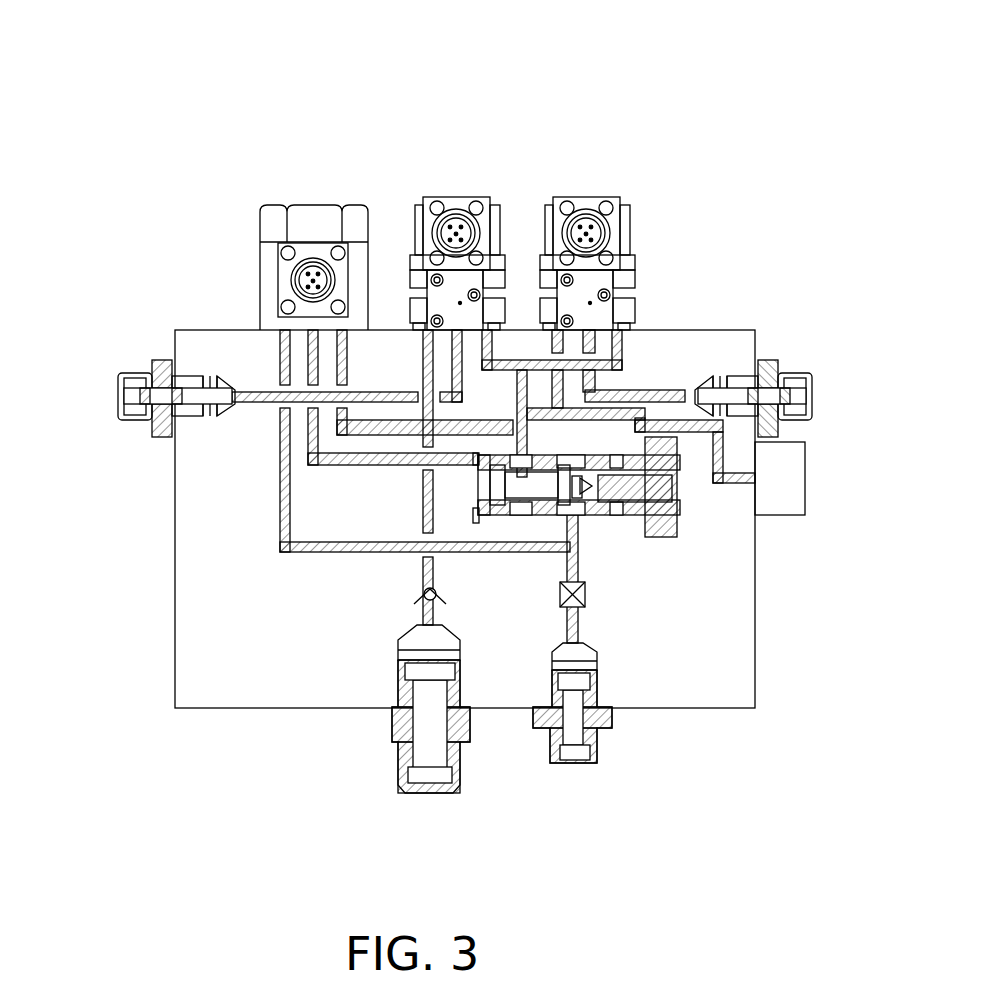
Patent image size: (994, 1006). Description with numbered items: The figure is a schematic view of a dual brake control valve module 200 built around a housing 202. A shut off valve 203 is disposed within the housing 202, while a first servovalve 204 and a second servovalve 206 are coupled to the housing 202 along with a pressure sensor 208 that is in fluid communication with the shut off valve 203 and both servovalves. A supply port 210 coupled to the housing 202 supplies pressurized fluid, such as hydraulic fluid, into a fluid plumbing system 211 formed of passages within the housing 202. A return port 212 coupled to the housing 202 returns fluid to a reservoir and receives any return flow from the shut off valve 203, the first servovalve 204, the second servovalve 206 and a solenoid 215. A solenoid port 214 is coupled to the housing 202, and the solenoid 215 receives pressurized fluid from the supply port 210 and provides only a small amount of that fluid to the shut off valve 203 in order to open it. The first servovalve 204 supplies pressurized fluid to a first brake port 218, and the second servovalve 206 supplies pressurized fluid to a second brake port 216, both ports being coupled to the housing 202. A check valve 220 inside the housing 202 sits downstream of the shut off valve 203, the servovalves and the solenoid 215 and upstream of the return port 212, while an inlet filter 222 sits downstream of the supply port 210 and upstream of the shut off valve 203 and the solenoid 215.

The dual brake control valve module 200 is at (742, 78).
The housing 202 is at (685, 330).
The shut off valve 203 is at (677, 517).
The first servovalve 204 is at (592, 197).
The second servovalve 206 is at (458, 197).
The pressure sensor 208 is at (808, 470).
The supply port 210 is at (583, 763).
The fluid plumbing system 211 is at (280, 507).
The return port 212 is at (398, 766).
The solenoid port 214 is at (282, 280).
The solenoid 215 is at (282, 228).
The second brake port 216 is at (788, 357).
The first brake port 218 is at (132, 373).
The check valve 220 is at (430, 593).
The inlet filter 222 is at (585, 597).